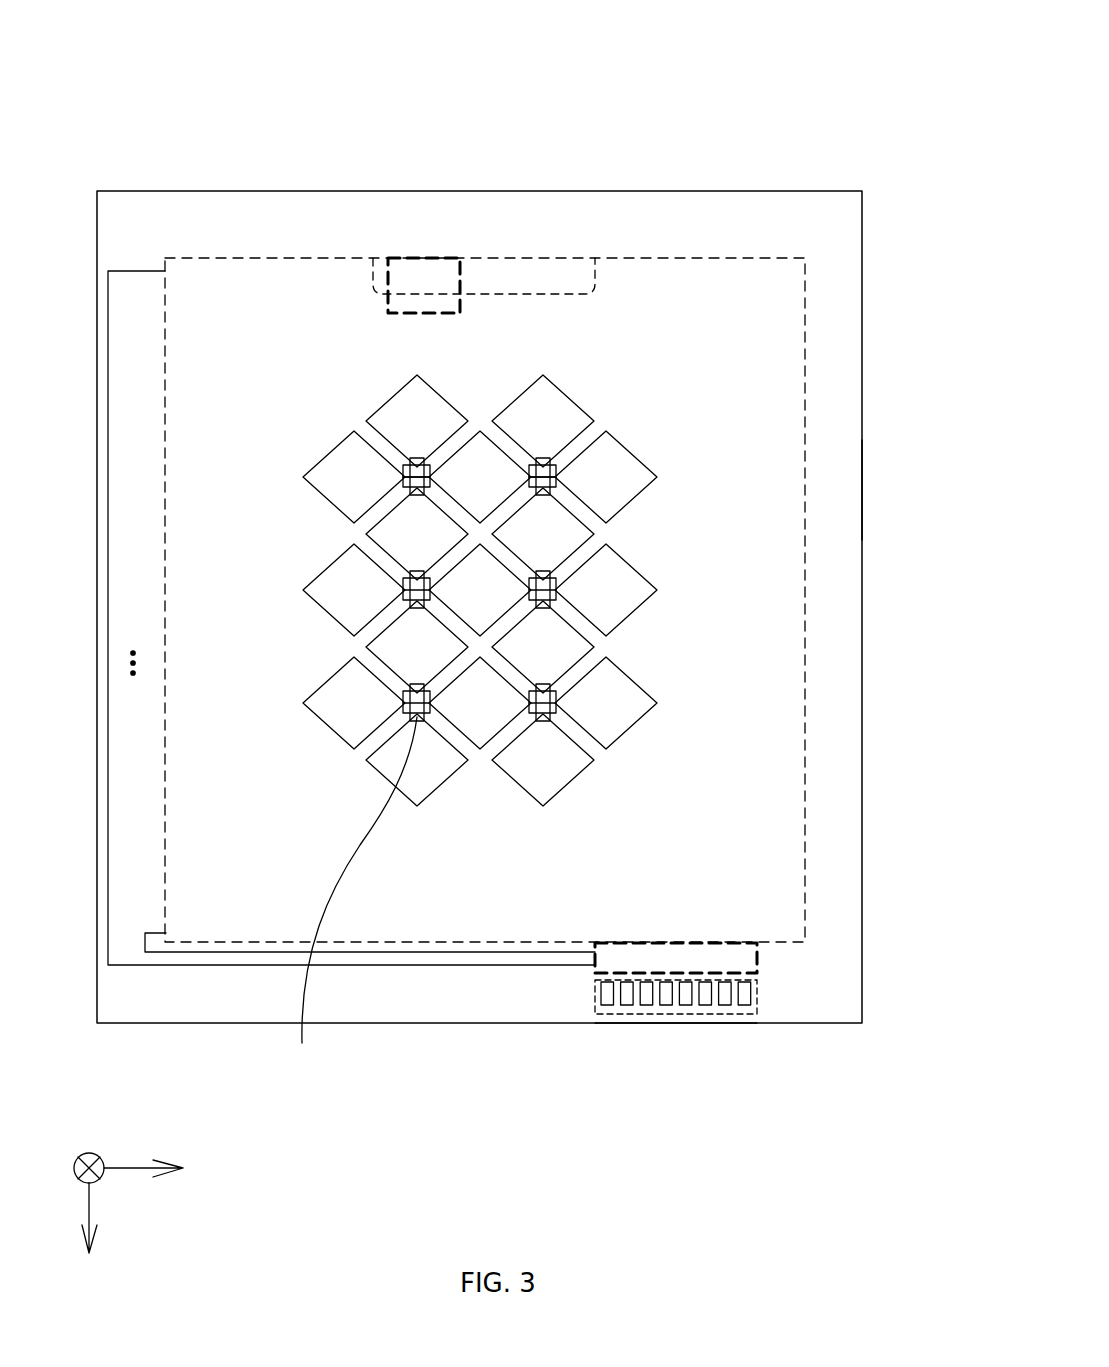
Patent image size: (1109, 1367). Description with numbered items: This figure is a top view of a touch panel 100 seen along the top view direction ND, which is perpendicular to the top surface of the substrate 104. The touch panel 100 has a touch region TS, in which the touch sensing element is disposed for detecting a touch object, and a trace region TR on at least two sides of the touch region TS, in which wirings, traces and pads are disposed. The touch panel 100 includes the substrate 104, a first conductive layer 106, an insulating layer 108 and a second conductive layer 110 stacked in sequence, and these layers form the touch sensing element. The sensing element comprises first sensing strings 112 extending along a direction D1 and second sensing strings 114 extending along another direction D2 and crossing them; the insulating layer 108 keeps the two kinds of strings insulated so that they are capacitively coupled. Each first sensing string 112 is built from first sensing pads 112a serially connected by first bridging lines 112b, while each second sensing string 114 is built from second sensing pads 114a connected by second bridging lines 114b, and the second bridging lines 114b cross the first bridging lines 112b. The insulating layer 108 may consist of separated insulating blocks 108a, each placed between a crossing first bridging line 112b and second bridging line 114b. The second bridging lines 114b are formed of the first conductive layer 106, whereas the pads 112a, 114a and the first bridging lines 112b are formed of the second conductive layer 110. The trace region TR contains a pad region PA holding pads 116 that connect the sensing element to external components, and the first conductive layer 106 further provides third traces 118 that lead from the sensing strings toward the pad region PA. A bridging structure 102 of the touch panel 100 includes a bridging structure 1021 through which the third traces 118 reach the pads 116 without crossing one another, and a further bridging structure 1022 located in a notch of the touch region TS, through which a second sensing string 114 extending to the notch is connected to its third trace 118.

The touch panel 100 is at (777, 97).
The bridging structure 102 is at (549, 571).
The bridging structure 1021 is at (757, 959).
The bridging structure 1022 is at (423, 257).
The substrate 104 is at (695, 1023).
The first conductive layer 106 is at (351, 702).
The insulating layer 108 is at (520, 397).
The insulating block 108a is at (432, 463).
The second conductive layer 110 is at (534, 588).
The first sensing string 112 is at (541, 438).
The first sensing pad 112a is at (312, 473).
The first bridging line 112b is at (417, 478).
The second sensing string 114 is at (440, 616).
The second sensing pad 114a is at (397, 400).
The second bridging line 114b is at (347, 900).
The pad 116 is at (608, 1000).
The third trace 118 is at (108, 935).
The touch region TS is at (783, 437).
The trace region TR is at (852, 492).
The pad region PA is at (757, 1002).
The top view direction ND is at (89, 1151).
The direction D1 is at (154, 1155).
The direction D2 is at (88, 1235).